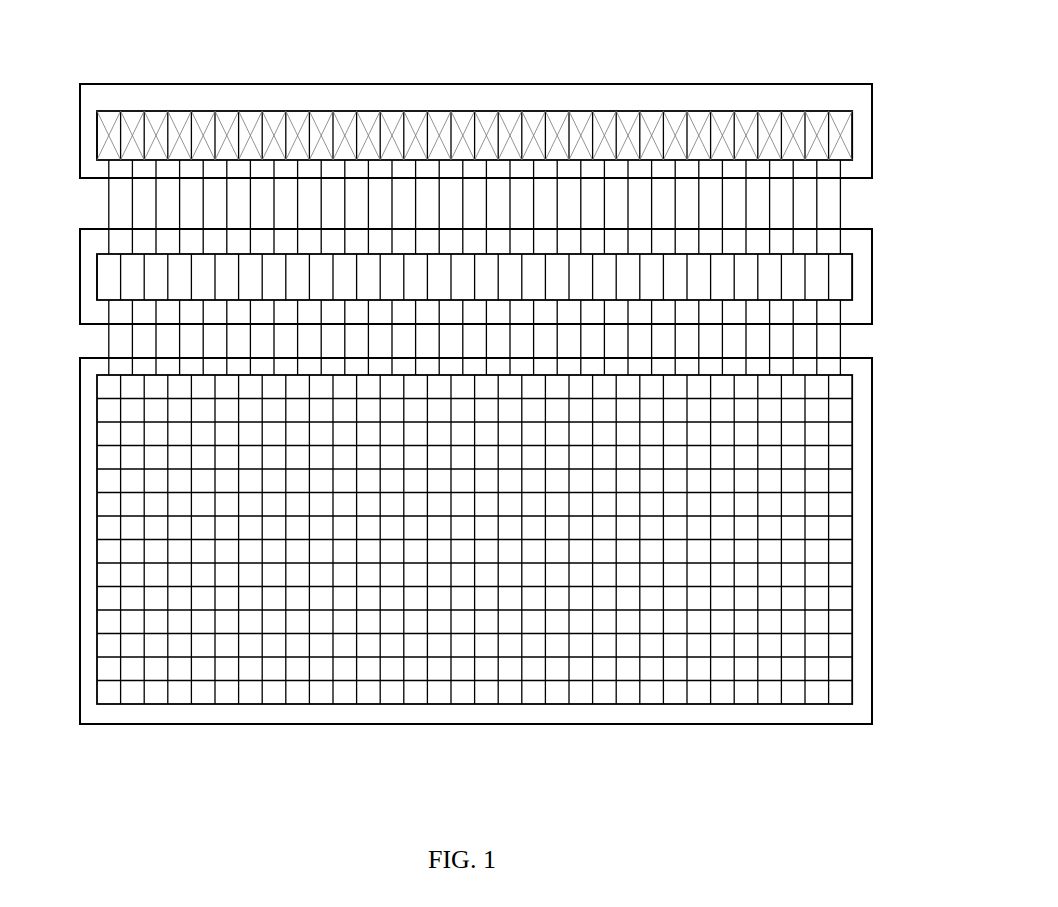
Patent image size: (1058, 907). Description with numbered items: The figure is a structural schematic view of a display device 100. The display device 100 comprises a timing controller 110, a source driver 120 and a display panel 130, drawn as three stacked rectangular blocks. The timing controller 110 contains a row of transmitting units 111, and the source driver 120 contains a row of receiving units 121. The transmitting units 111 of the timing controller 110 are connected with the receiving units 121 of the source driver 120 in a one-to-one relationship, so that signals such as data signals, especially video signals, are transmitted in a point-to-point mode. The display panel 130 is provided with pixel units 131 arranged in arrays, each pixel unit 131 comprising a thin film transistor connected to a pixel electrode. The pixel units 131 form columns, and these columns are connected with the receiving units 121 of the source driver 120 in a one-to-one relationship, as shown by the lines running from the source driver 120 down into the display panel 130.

The display device 100 is at (777, 52).
The timing controller 110 is at (873, 137).
The transmitting units 111 is at (555, 120).
The source driver 120 is at (870, 280).
The receiving units 121 is at (220, 277).
The display panel 130 is at (871, 522).
The pixel units 131 is at (523, 645).